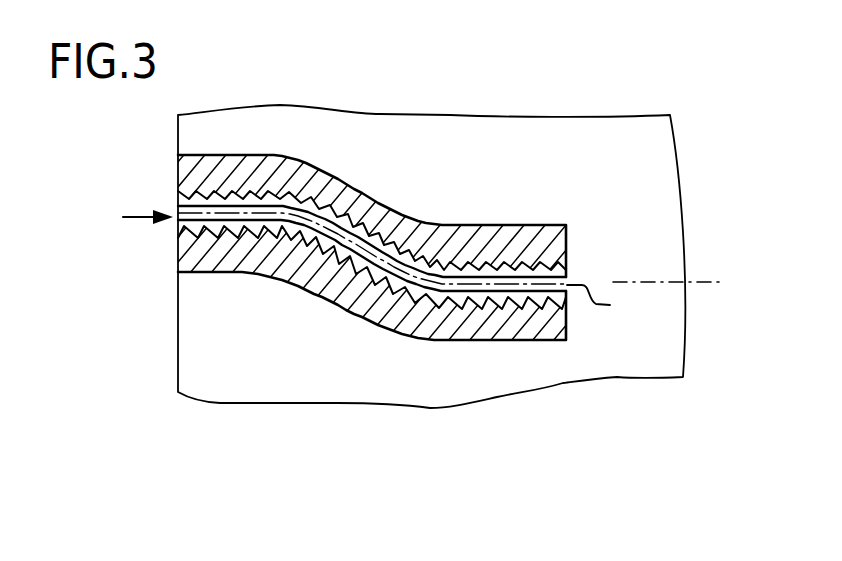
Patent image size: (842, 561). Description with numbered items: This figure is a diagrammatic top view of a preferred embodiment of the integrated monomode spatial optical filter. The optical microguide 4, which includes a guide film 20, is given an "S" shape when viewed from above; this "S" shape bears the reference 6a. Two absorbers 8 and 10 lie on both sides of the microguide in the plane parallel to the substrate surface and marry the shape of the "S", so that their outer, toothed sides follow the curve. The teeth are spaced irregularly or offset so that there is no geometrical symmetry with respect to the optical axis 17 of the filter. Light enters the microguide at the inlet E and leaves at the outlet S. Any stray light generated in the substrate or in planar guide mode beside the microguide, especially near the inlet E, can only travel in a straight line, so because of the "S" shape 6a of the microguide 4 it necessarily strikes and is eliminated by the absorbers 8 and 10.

The guide film 20 is at (667, 155).
The absorber 8 is at (230, 167).
The absorber 10 is at (224, 262).
The "S" shape 6a is at (287, 196).
The optical microguide 4 is at (376, 299).
The optical axis 17 is at (698, 280).
The inlet E is at (177, 207).
The exit S is at (600, 305).